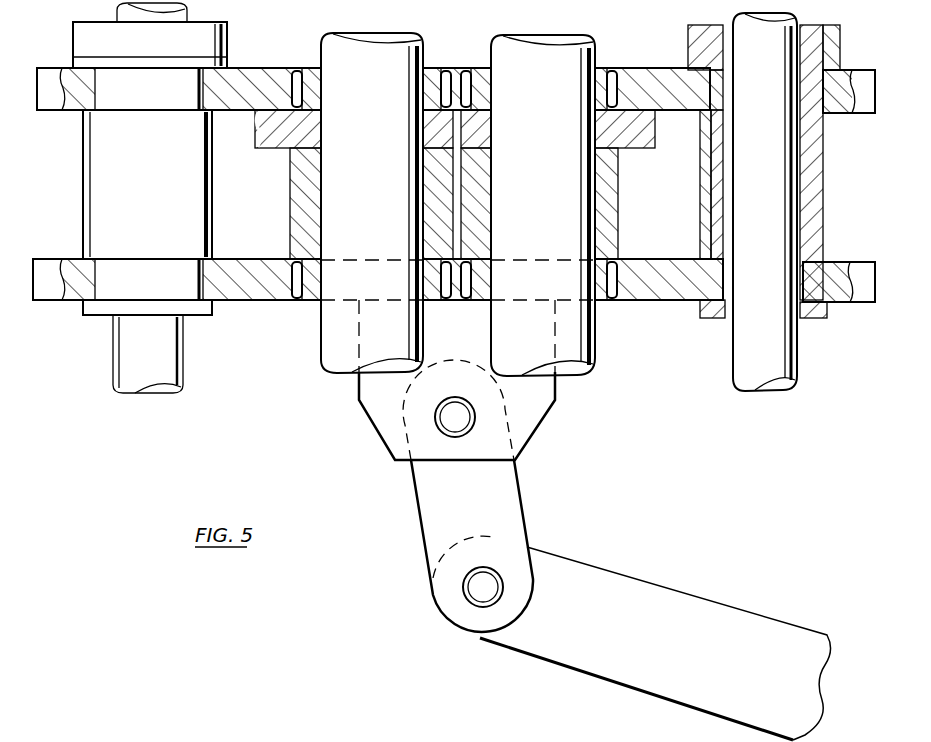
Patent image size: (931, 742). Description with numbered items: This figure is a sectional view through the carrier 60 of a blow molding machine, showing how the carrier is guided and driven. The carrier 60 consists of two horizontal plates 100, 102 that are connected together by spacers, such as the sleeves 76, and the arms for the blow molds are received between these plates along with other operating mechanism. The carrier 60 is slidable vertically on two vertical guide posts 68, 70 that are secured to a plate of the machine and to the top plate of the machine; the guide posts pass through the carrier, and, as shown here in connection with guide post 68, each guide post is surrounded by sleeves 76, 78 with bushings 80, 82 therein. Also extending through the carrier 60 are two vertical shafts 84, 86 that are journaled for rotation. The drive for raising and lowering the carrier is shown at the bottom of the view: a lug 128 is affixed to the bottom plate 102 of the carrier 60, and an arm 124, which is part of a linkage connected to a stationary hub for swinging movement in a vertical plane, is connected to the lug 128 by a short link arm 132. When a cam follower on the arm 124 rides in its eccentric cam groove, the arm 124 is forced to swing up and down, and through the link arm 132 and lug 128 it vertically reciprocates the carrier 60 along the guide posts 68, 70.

The carrier 60 is at (243, 304).
The guide post 68 is at (775, 193).
The guide post 70 is at (163, 374).
The sleeve 76 is at (158, 193).
The sleeve 78 is at (714, 194).
The bushing 80 is at (718, 306).
The bushing 82 is at (727, 24).
The vertical shaft 84 is at (550, 103).
The vertical shaft 86 is at (378, 103).
The horizontal plate 100 is at (258, 80).
The horizontal plate 102 is at (238, 273).
The arm 124 is at (700, 612).
The lug 128 is at (527, 421).
The link arm 132 is at (510, 502).